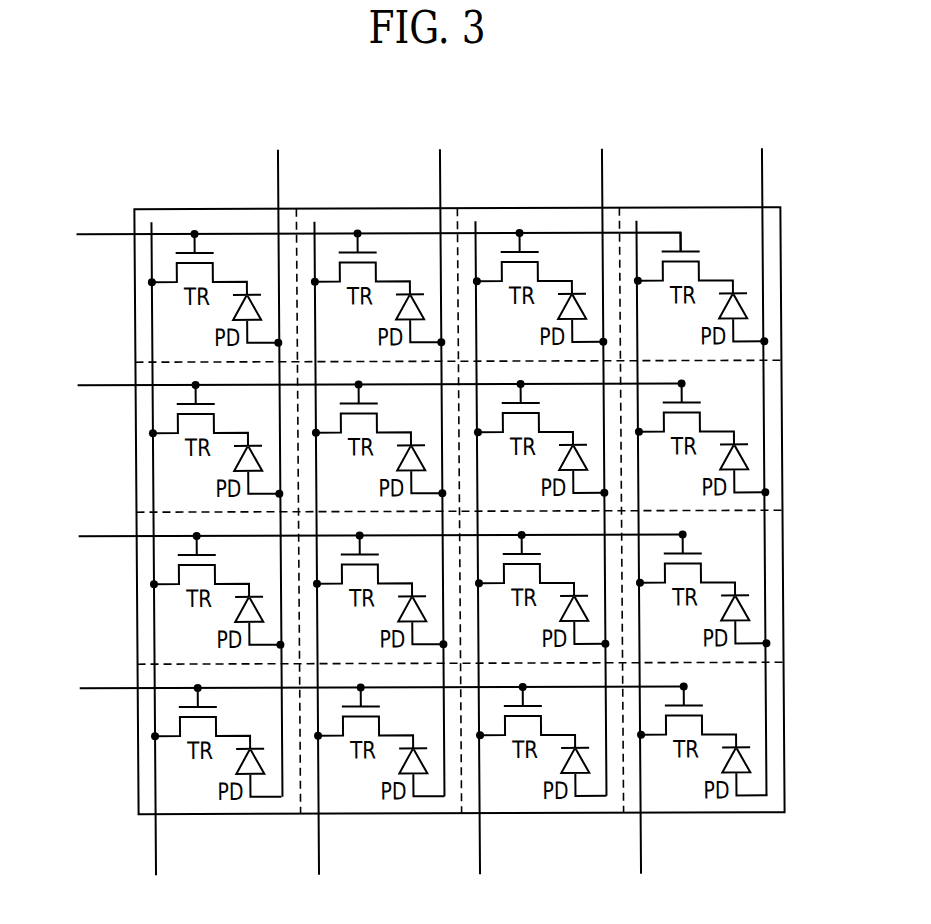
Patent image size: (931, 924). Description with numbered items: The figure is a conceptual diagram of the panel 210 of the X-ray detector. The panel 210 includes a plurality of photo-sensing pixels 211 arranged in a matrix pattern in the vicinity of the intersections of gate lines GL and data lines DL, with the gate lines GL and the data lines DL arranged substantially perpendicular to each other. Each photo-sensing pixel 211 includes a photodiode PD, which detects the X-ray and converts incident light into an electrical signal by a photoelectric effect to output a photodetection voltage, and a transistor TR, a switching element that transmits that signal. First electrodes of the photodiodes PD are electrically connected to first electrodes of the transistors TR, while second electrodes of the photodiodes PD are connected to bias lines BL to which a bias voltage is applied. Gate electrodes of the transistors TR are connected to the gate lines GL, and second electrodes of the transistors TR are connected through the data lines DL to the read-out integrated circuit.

The panel 210 is at (678, 208).
The photo-sensing pixel 211 is at (344, 218).
The gate line GL is at (379, 446).
The data line DL is at (382, 548).
The bias line BL is at (538, 472).